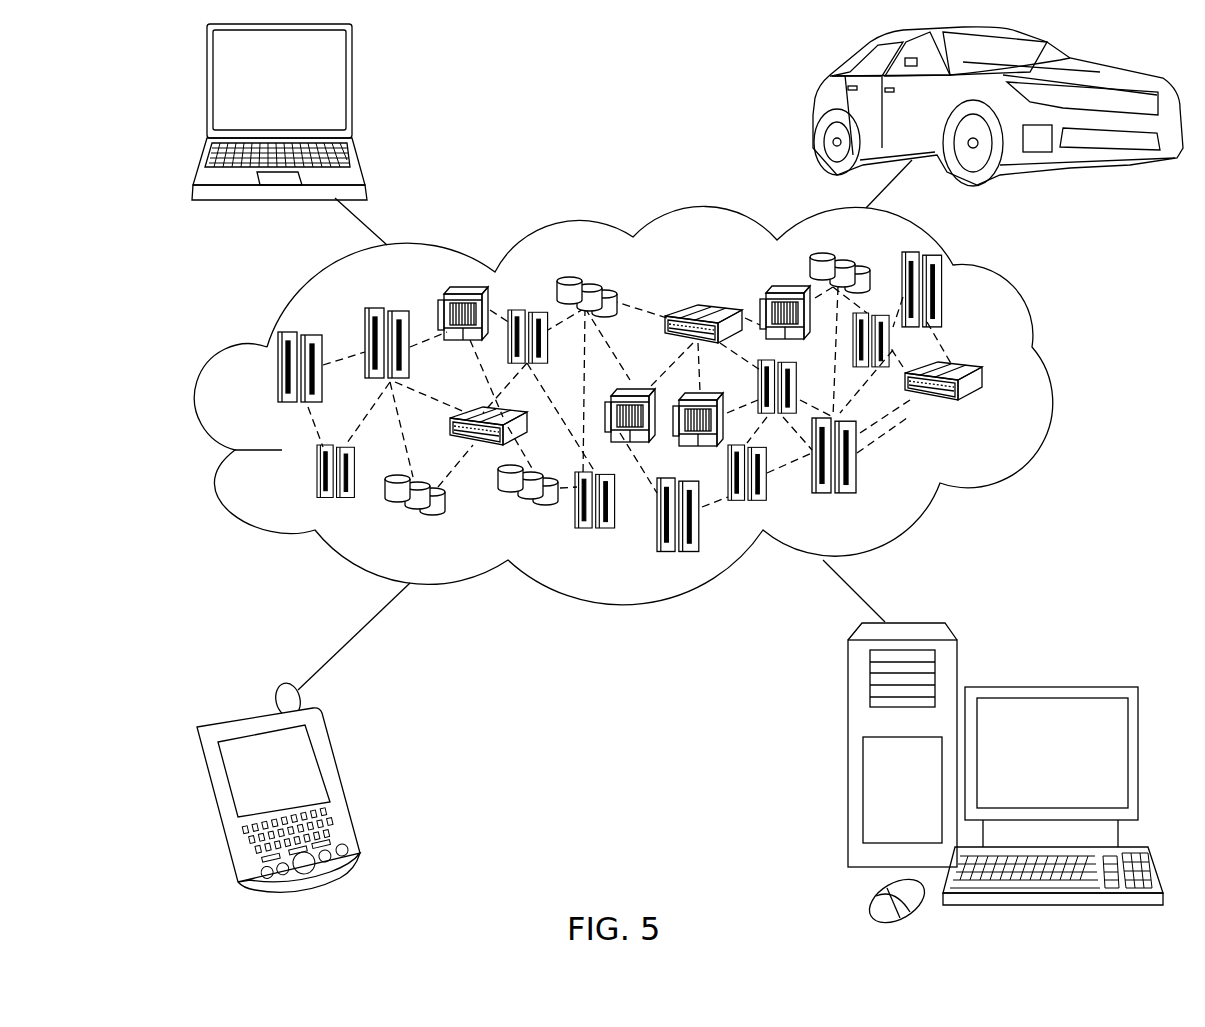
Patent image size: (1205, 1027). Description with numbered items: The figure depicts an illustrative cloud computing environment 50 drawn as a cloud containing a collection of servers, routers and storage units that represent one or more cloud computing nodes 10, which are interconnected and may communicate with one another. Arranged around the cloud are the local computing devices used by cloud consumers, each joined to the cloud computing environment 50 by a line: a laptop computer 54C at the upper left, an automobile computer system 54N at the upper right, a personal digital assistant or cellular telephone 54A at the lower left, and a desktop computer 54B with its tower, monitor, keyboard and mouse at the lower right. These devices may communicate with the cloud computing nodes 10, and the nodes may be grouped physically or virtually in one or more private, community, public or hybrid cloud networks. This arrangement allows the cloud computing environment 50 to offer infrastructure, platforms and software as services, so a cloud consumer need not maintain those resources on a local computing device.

The cloud computing node 10 is at (997, 414).
The cloud computing environment 50 is at (1052, 377).
The personal digital assistant or cellular telephone 54A is at (342, 785).
The desktop computer 54B is at (1048, 685).
The laptop computer 54C is at (352, 90).
The automobile computer system 54N is at (815, 105).